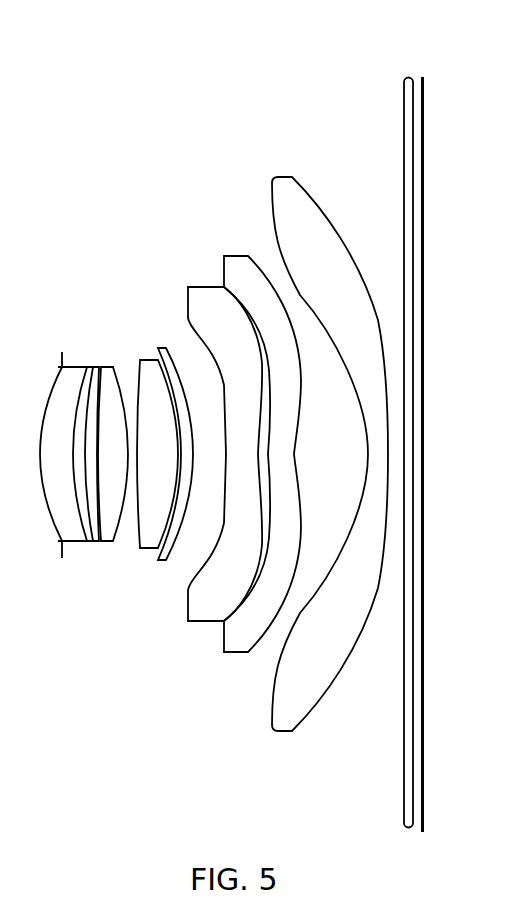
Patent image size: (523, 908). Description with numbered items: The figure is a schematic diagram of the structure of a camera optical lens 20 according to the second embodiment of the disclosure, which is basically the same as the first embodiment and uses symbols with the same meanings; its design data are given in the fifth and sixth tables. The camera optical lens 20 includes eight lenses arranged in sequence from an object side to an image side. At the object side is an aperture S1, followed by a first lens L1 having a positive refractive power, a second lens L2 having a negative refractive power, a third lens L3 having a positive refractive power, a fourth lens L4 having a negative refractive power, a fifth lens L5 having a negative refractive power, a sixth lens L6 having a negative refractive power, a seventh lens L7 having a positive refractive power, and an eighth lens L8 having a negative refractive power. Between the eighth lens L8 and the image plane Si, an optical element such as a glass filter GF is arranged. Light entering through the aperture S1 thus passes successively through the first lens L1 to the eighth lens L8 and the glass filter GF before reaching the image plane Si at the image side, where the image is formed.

The camera optical lens 20 is at (235, 43).
The aperture S1 is at (61, 457).
The first lens L1 is at (65, 470).
The second lens L2 is at (95, 442).
The third lens L3 is at (114, 442).
The fourth lens L4 is at (155, 444).
The fifth lens L5 is at (175, 443).
The sixth lens L6 is at (225, 441).
The seventh lens L7 is at (262, 441).
The eighth lens L8 is at (330, 443).
The glass filter GF is at (406, 443).
The image plane Si is at (424, 444).